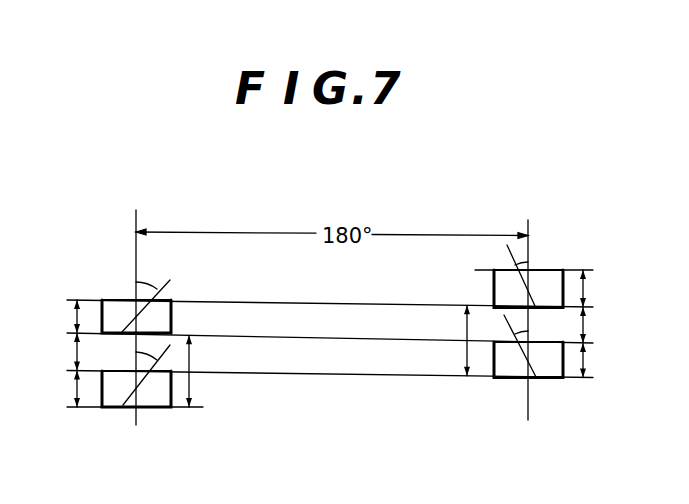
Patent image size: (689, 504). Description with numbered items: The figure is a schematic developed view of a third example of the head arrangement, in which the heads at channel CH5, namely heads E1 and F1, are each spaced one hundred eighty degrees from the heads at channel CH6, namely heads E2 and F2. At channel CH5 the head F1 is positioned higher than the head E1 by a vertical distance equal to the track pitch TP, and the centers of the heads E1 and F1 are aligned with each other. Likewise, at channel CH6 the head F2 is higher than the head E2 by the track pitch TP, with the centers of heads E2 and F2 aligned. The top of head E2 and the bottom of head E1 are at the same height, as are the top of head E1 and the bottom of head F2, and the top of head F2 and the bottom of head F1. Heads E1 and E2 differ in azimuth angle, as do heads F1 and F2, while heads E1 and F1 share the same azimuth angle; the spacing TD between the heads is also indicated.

The channel CH5 is at (528, 289).
The channel CH6 is at (132, 287).
The head F1 is at (555, 270).
The head E1 is at (548, 380).
The head F2 is at (170, 298).
The head E2 is at (148, 408).
The track pitch TP is at (326, 338).
The track displacement TD is at (328, 356).